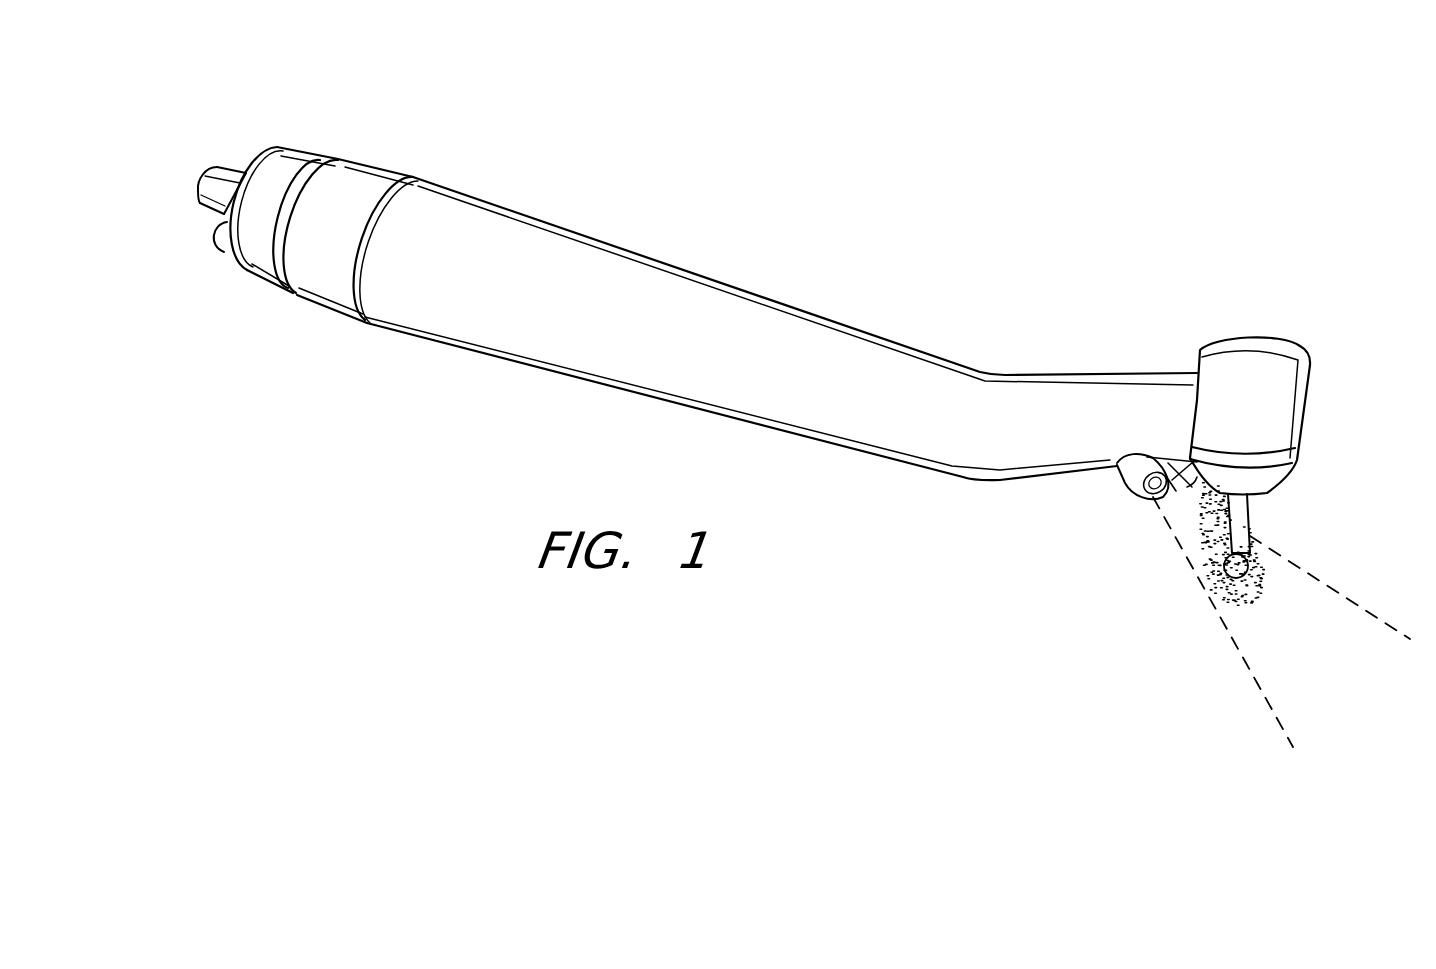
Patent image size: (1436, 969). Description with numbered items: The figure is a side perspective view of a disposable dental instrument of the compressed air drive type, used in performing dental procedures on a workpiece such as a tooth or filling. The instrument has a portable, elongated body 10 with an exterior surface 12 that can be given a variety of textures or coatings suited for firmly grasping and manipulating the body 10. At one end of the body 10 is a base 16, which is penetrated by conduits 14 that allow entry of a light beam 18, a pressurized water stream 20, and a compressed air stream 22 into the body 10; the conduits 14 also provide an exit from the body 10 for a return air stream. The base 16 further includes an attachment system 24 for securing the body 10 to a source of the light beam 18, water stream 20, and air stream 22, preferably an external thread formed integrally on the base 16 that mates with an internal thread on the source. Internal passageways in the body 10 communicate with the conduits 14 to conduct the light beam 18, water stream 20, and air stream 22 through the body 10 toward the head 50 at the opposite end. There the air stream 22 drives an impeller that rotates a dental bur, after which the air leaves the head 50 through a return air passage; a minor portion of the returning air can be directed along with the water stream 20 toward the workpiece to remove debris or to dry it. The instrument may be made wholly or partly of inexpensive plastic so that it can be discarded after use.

The body 10 is at (778, 403).
The exterior surface 12 is at (530, 302).
The conduits 14 is at (200, 228).
The base 16 is at (342, 352).
The light beam 18 is at (1365, 605).
The pressurized water stream 20 is at (1208, 547).
The compressed air stream 22 is at (1270, 572).
The attachment system 24 is at (312, 133).
The head 50 is at (1265, 317).